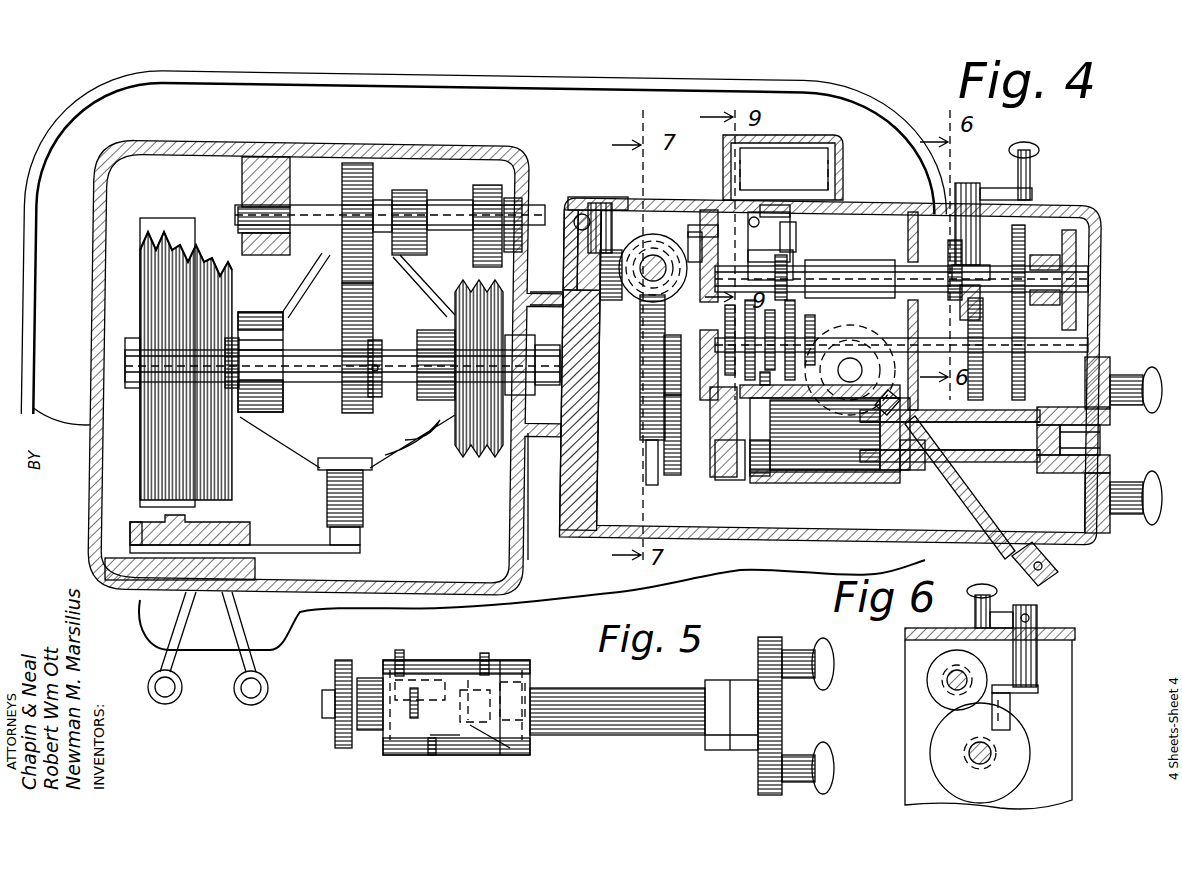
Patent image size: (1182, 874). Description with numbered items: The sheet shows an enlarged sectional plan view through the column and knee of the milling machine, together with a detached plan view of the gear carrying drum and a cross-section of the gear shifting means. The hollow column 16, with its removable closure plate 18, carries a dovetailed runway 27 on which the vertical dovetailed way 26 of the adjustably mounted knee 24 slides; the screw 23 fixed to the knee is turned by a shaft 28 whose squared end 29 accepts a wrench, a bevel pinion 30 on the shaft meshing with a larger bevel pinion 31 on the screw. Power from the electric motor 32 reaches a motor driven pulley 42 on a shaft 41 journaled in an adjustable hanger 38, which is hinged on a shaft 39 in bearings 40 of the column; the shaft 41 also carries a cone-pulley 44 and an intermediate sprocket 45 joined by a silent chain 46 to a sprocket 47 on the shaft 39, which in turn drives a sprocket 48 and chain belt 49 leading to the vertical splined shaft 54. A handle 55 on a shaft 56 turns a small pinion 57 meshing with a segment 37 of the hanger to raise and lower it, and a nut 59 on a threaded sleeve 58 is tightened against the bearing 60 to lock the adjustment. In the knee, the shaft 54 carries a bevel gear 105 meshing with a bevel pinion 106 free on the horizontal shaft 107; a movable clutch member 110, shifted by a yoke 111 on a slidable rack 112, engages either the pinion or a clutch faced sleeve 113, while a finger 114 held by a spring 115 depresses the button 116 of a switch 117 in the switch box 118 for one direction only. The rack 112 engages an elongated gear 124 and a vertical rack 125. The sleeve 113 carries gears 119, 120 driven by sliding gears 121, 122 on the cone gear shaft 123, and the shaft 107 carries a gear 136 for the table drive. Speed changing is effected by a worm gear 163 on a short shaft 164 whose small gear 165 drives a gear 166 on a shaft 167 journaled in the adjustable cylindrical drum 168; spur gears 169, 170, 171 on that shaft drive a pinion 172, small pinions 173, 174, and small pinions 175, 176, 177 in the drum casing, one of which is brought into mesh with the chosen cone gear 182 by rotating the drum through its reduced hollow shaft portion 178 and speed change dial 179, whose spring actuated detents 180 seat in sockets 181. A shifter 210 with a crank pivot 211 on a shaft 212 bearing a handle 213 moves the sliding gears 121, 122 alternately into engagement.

In FIG. 4, the hollow frame or column 16 is at (262, 150).
In FIG. 4, the removable closure plate 18 is at (92, 337).
In FIG. 4, the screw 23 is at (855, 333).
In FIG. 4, the adjustably mounted knee 24 is at (880, 200).
In FIG. 4, the vertical dovetailed way 26 is at (563, 455).
In FIG. 4, the dovetailed runway 27 is at (560, 300).
In FIG. 4, the shaft 28 is at (935, 498).
In FIG. 4, the squared end 29 is at (1058, 575).
In FIG. 4, the bevel pinion 30 is at (903, 392).
In FIG. 4, the larger bevel pinion 31 is at (800, 385).
In FIG. 4, the electric motor 32 is at (275, 440).
In FIG. 4, the segment 37 is at (365, 530).
In FIG. 4, the adjustable hanger 38 is at (292, 298).
In FIG. 4, the shaft 39 is at (265, 213).
In FIG. 4, the bearings 40 is at (260, 198).
In FIG. 4, the shaft 41 is at (342, 345).
In FIG. 4, the motor driven pulley 42 is at (478, 458).
In FIG. 4, the cone-pulley 44 is at (150, 300).
In FIG. 4, the intermediate sprocket 45 is at (345, 392).
In FIG. 4, the silent chain 46 is at (345, 296).
In FIG. 4, the sprocket 47 is at (366, 165).
In FIG. 4, the sprocket 48 is at (480, 186).
In FIG. 4, the chain belt 49 is at (498, 196).
In FIG. 4, the vertical splined shaft 54 is at (645, 258).
In FIG. 4, the handle 55 is at (240, 618).
In FIG. 4, the shaft 56 is at (265, 530).
In FIG. 4, the small pinion 57 is at (362, 560).
In FIG. 4, the sleeve 58 is at (218, 522).
In FIG. 4, the nut 59 is at (140, 590).
In FIG. 4, the bearing 60 is at (130, 526).
In FIG. 4, the bevel gear 105 is at (655, 250).
In FIG. 4, the bevel pinion 106 is at (688, 250).
In FIG. 4, the horizontal shaft 107 is at (860, 285).
In FIG. 6, the horizontal shaft 107 is at (965, 675).
In FIG. 4, the movable clutch member 110 is at (790, 262).
In FIG. 4, the yoke 111 is at (790, 252).
In FIG. 4, the slidable rack 112 is at (700, 225).
In FIG. 4, the clutch faced sleeve 113 is at (840, 265).
In FIG. 4, the finger 114 is at (778, 205).
In FIG. 4, the spring 115 is at (790, 225).
In FIG. 4, the button 116 is at (754, 210).
In FIG. 4, the switch 117 is at (784, 166).
In FIG. 4, the switch box 118 is at (812, 135).
In FIG. 4, the gear 119 is at (946, 262).
In FIG. 6, the gear 119 is at (945, 665).
In FIG. 4, the gear 120 is at (1035, 252).
In FIG. 4, the sliding gear 121 is at (983, 390).
In FIG. 6, the sliding gear 121 is at (1005, 748).
In FIG. 4, the sliding gear 122 is at (1028, 380).
In FIG. 4, the cone gear shaft 123 is at (878, 345).
In FIG. 6, the cone gear shaft 123 is at (992, 760).
In FIG. 4, the elongated gear 124 is at (612, 213).
In FIG. 4, the vertical rack 125 is at (572, 198).
In FIG. 4, the gear 136 is at (1090, 262).
In FIG. 4, the worm gear 163 is at (640, 415).
In FIG. 4, the short shaft 164 is at (568, 355).
In FIG. 4, the small gear 165 is at (672, 282).
In FIG. 4, the gear 166 is at (665, 470).
In FIG. 5, the gear 166 is at (348, 660).
In FIG. 4, the shaft 167 is at (866, 450).
In FIG. 4, the adjustable cylindrical drum 168 is at (840, 483).
In FIG. 5, the adjustable cylindrical drum 168 is at (530, 666).
In FIG. 4, the spur gear 169 is at (745, 480).
In FIG. 5, the spur gear 169 is at (372, 732).
In FIG. 4, the spur gear 170 is at (790, 485).
In FIG. 5, the spur gear 170 is at (432, 665).
In FIG. 4, the spur gear 171 is at (800, 472).
In FIG. 5, the spur gear 171 is at (508, 756).
In FIG. 4, the pinion 172 is at (757, 373).
In FIG. 5, the pinion 172 is at (399, 650).
In FIG. 4, the small pinion 173 is at (752, 480).
In FIG. 5, the small pinion 173 is at (414, 745).
In FIG. 5, the small pinion 174 is at (432, 757).
In FIG. 5, the small pinion 175 is at (462, 756).
In FIG. 5, the small pinion 176 is at (466, 660).
In FIG. 5, the small pinion 177 is at (490, 655).
In FIG. 4, the reduced hollow shaft portion 178 is at (924, 422).
In FIG. 5, the reduced hollow shaft portion 178 is at (608, 690).
In FIG. 4, the speed change dial 179 is at (1110, 438).
In FIG. 5, the speed change dial 179 is at (782, 707).
In FIG. 4, the spring actuated detents 180 is at (1145, 367).
In FIG. 5, the spring actuated detents 180 is at (800, 652).
In FIG. 4, the sockets 181 is at (1100, 345).
In FIG. 4, the cone gears 182 is at (785, 318).
In FIG. 4, the shifter 210 is at (965, 320).
In FIG. 6, the shifter 210 is at (1012, 706).
In FIG. 4, the crank pivot 211 is at (986, 268).
In FIG. 6, the crank pivot 211 is at (1040, 688).
In FIG. 4, the shaft 212 is at (965, 183).
In FIG. 6, the shaft 212 is at (1040, 612).
In FIG. 4, the handle 213 is at (1030, 148).
In FIG. 6, the handle 213 is at (972, 593).